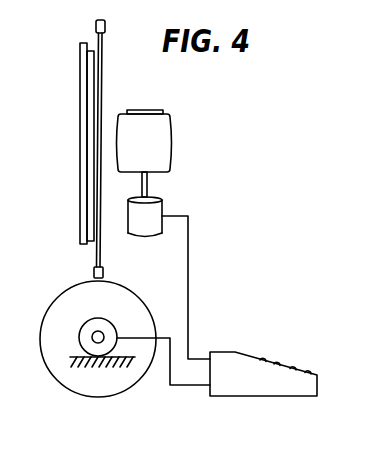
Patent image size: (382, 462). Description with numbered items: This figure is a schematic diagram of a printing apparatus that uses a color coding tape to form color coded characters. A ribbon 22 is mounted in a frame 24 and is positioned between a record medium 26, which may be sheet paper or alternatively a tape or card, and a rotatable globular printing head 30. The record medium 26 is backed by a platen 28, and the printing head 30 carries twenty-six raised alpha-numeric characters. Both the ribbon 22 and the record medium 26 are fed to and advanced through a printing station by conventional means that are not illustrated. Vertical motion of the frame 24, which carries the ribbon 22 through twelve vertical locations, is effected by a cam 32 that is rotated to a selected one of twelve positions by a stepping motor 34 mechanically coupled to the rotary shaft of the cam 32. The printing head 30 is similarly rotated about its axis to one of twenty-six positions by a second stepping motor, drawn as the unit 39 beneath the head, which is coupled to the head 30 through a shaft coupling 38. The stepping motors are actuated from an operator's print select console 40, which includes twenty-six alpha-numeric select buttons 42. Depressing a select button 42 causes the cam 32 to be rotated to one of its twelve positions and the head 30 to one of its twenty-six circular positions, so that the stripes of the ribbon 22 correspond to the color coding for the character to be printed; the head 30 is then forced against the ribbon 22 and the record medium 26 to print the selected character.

The ribbon 22 is at (102, 249).
The frame 24 is at (105, 25).
The record medium 26 is at (93, 58).
The platen 28 is at (80, 137).
The printing head 30 is at (163, 123).
The cam 32 is at (110, 380).
The stepping motor 34 is at (80, 325).
The shaft coupling 38 is at (148, 182).
The control box 39 is at (152, 208).
The print select console 40 is at (267, 388).
The alpha-numeric select buttons 42 is at (278, 360).